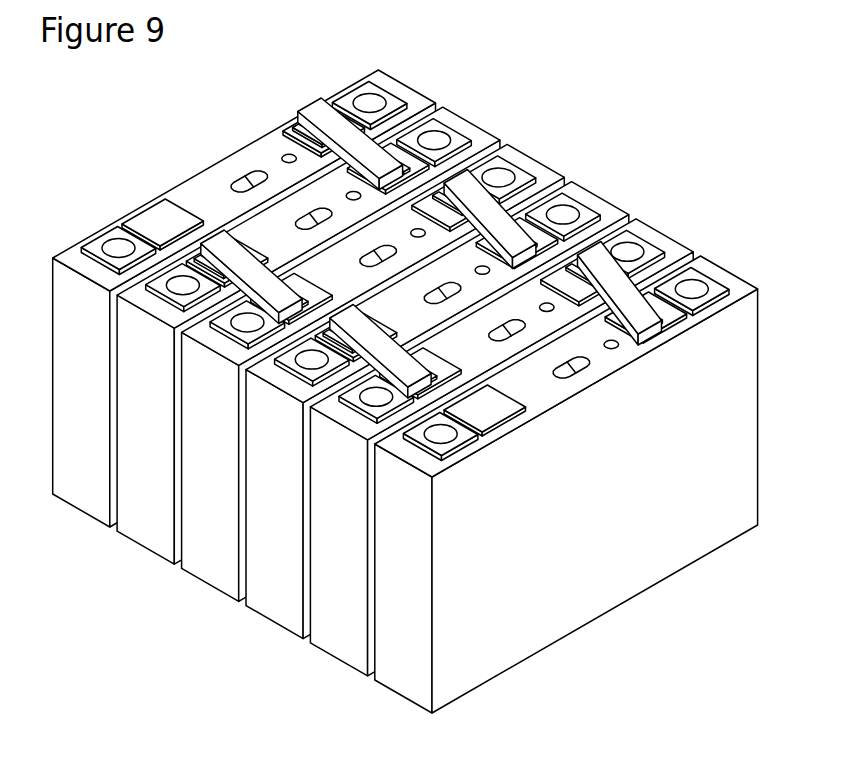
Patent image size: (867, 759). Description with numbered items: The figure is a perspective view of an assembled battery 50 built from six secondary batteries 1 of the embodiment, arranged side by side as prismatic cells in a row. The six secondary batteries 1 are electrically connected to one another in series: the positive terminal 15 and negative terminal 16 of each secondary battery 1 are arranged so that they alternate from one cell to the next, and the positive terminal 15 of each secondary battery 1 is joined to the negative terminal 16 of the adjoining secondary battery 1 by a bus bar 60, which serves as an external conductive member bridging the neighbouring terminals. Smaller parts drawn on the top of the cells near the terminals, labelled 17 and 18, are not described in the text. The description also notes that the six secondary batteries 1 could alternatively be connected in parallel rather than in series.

The secondary battery 1 is at (625, 572).
The positive terminal 15 is at (692, 289).
The negative terminal 16 is at (632, 250).
The connection strip 17 is at (635, 325).
The insulating plate 18 is at (567, 278).
The assembled battery 50 is at (607, 92).
The bus bar 60 is at (598, 272).